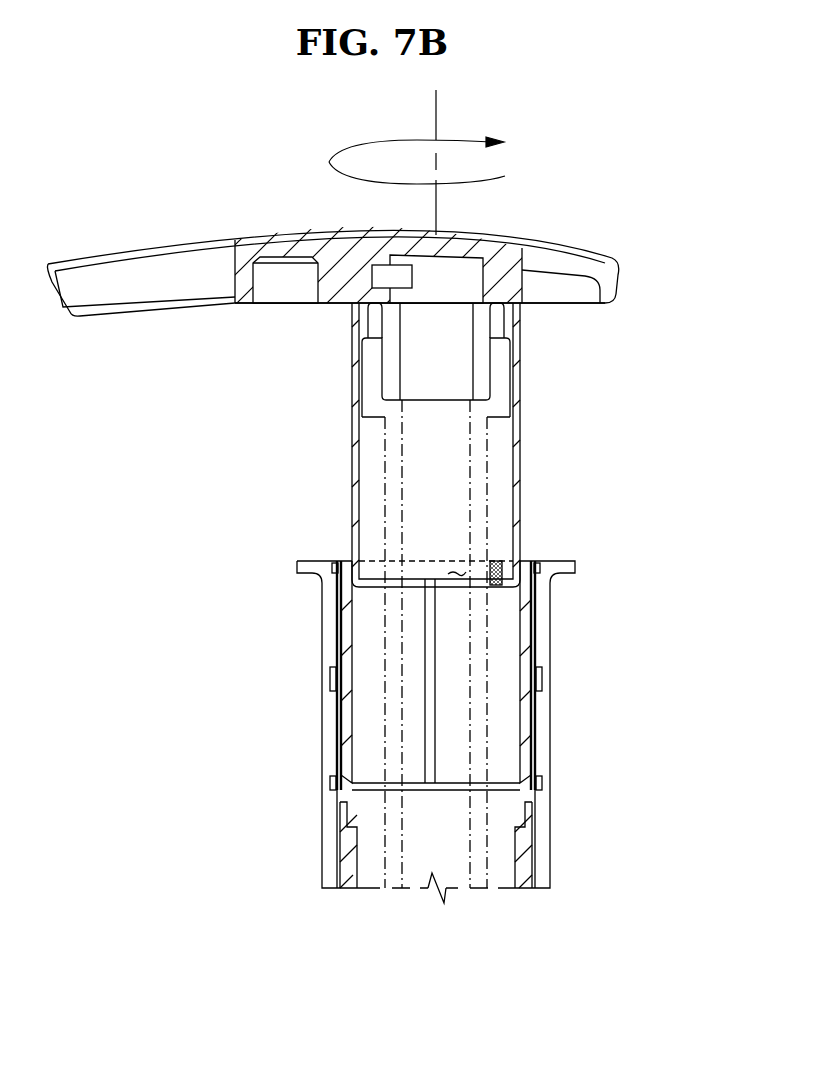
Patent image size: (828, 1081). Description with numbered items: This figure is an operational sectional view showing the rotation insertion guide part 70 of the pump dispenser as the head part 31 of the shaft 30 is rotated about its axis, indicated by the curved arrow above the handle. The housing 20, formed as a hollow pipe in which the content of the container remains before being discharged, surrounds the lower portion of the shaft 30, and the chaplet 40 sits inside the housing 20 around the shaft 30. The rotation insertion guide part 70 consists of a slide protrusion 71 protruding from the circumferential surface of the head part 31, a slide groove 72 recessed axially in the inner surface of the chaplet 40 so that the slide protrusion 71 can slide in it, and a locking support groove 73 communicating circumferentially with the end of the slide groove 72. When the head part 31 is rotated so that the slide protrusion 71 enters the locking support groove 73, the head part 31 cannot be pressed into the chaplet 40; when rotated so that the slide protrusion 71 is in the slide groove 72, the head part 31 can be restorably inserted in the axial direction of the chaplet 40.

The housing 20 is at (328, 743).
The shaft 30 is at (480, 492).
The head part 31 is at (356, 423).
The chaplet 40 is at (355, 815).
The rotation insertion guide part 70 is at (641, 600).
The slide protrusion 71 is at (515, 575).
The slide groove 72 is at (430, 668).
The locking support groove 73 is at (455, 578).